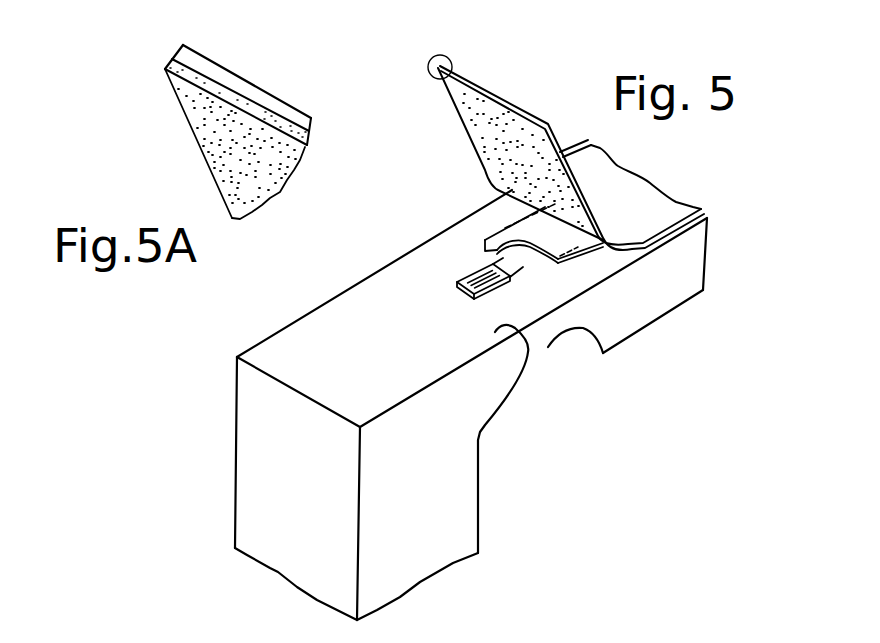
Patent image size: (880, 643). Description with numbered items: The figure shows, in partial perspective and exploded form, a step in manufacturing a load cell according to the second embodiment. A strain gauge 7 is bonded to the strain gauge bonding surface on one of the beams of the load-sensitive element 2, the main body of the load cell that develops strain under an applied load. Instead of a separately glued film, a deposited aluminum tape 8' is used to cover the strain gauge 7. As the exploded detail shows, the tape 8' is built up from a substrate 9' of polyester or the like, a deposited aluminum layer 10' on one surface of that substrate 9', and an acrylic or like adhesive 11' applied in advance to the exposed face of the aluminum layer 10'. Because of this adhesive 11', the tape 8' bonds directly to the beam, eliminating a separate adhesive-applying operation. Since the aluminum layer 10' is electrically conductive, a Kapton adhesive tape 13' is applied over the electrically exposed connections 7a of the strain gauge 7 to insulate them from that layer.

In FIG. 5, the load-sensitive element 2 is at (312, 342).
In FIG. 5, the strain gauge 7 is at (455, 281).
In FIG. 5, the electrically exposed connections 7a is at (527, 262).
In FIG. 5, the deposited aluminum tape 8' is at (566, 147).
In FIG. 5A, the deposited aluminum tape 8' is at (238, 94).
In FIG. 5A, the substrate 9' is at (247, 72).
In FIG. 5A, the deposited aluminum layer 10' is at (155, 80).
In FIG. 5A, the adhesive 11' is at (229, 144).
In FIG. 5, the Kapton adhesive tape 13' is at (506, 213).